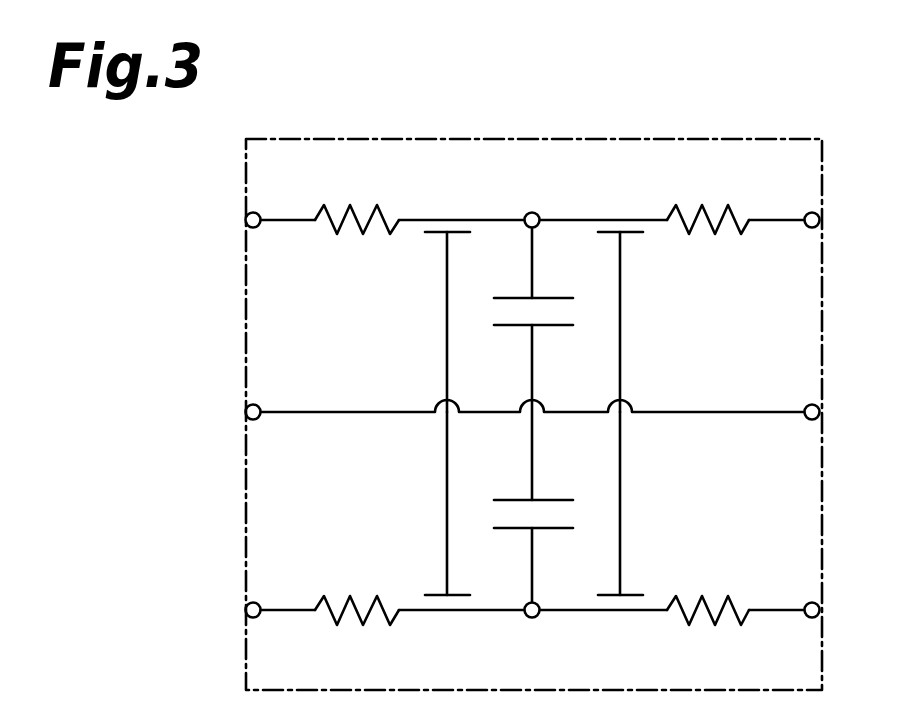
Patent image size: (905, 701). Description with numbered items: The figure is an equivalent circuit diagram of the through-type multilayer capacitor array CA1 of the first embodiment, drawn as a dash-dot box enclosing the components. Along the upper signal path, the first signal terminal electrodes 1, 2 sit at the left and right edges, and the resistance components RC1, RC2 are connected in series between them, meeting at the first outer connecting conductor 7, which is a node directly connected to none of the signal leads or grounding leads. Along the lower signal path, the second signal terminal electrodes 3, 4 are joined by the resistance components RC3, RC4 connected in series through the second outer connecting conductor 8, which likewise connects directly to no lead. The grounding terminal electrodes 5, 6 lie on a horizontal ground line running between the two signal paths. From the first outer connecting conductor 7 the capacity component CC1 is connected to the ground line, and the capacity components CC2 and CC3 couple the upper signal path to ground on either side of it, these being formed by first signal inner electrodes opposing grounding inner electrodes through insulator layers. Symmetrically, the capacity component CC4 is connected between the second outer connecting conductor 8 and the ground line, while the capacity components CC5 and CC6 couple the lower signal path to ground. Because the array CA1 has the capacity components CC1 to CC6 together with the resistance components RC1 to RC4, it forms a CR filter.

The through-type multilayer capacitor array CA1 is at (736, 138).
The resistance component RC1 is at (351, 240).
The resistance component RC2 is at (722, 242).
The resistance component RC3 is at (350, 586).
The resistance component RC4 is at (719, 588).
The capacity component CC1 is at (547, 331).
The capacity component CC2 is at (434, 240).
The capacity component CC3 is at (633, 244).
The capacity component CC4 is at (517, 495).
The capacity component CC5 is at (432, 580).
The capacity component CC6 is at (634, 583).
The first signal terminal electrode 1 is at (236, 245).
The first signal terminal electrode 2 is at (831, 242).
The second signal terminal electrode 3 is at (236, 615).
The second signal terminal electrode 4 is at (831, 609).
The grounding terminal electrode 5 is at (236, 415).
The grounding terminal electrode 6 is at (831, 409).
The first outer connecting conductor 7 is at (533, 194).
The second outer connecting conductor 8 is at (533, 637).